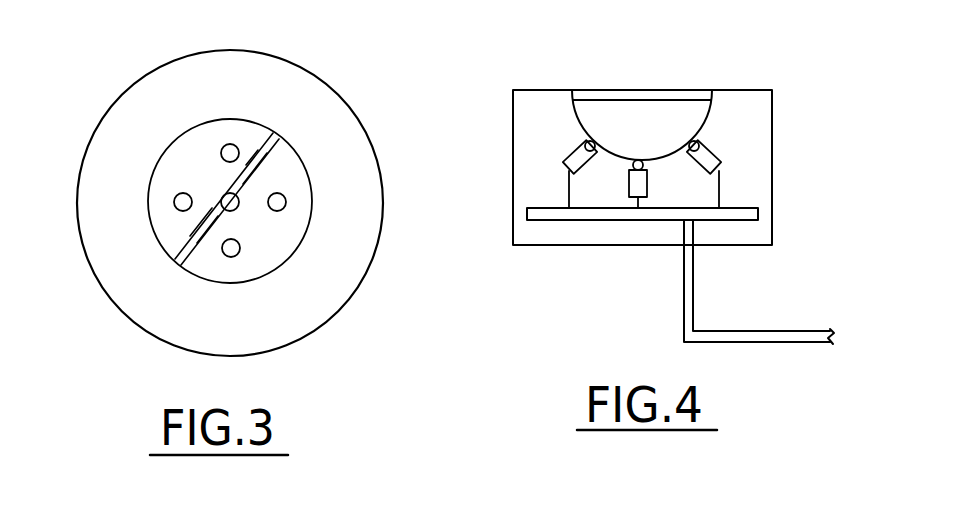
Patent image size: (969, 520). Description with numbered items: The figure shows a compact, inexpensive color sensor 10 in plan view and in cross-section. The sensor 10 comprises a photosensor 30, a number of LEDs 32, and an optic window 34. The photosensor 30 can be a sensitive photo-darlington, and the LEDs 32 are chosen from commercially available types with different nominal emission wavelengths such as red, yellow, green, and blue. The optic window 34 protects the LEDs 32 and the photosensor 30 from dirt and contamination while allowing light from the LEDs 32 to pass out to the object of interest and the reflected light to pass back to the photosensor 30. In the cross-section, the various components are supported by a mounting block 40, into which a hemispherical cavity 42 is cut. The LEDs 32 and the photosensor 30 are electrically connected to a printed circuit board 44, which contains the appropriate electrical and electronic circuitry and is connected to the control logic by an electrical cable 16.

In FIG. 3, the color sensor 10 is at (127, 335).
In FIG. 4, the electrical cable 16 is at (767, 330).
In FIG. 3, the photosensor 30 is at (240, 197).
In FIG. 4, the photosensor 30 is at (631, 188).
In FIG. 3, the LEDs 32 is at (231, 257).
In FIG. 4, the LEDs 32 is at (567, 158).
In FIG. 3, the optic window 34 is at (214, 120).
In FIG. 4, the optic window 34 is at (679, 72).
In FIG. 4, the mounting block 40 is at (772, 140).
In FIG. 4, the hemispherical cavity 42 is at (712, 108).
In FIG. 4, the printed circuit board 44 is at (758, 213).